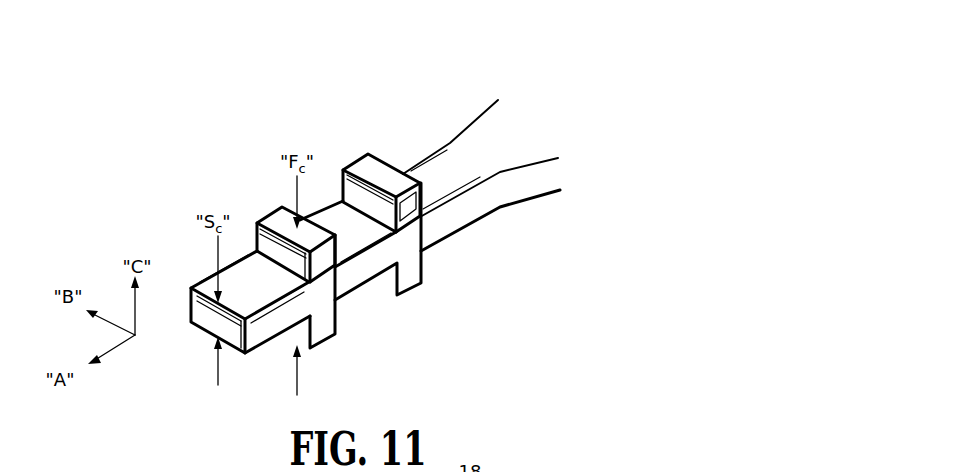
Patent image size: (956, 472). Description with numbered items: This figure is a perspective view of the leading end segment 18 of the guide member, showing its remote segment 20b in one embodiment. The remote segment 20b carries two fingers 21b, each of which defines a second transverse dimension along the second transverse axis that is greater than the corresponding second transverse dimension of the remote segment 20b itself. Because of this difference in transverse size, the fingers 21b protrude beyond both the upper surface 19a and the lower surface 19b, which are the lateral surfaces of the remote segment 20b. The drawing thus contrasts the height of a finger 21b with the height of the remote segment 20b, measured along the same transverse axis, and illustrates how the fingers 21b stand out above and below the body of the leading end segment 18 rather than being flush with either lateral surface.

The leading end segment 18 is at (501, 72).
The upper surface 19a is at (346, 218).
The lower surface 19b is at (362, 285).
The remote segment 20b is at (265, 127).
The finger 21b is at (274, 218).